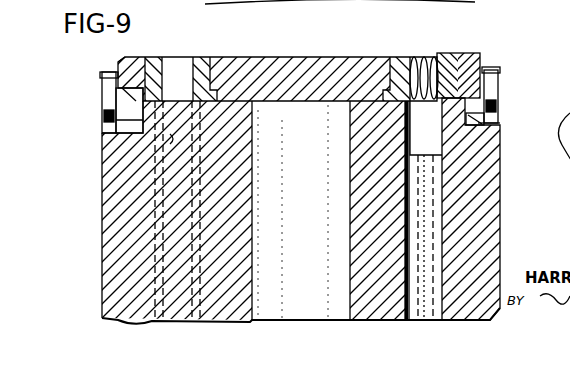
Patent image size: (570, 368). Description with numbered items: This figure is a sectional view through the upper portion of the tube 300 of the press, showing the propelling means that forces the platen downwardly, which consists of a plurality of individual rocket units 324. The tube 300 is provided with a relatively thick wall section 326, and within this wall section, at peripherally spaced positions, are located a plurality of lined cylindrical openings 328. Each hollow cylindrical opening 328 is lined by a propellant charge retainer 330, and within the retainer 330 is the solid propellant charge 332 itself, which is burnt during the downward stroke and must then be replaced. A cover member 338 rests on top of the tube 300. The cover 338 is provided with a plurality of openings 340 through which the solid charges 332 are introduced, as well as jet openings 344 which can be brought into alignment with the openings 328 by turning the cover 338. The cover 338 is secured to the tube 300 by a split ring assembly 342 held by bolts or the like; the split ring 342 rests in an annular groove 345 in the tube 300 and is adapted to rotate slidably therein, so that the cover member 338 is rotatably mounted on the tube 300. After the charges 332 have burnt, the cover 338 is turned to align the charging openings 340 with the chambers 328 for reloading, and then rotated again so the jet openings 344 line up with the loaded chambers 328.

The tube 300 is at (110, 274).
The rocket units 324 is at (397, 58).
The thick wall section 326 is at (487, 180).
The lined cylindrical openings 328 is at (200, 197).
The propellant charge retainer 330 is at (200, 160).
The solid propellant charge 332 is at (168, 240).
The cover member 338 is at (302, 59).
The openings 340 is at (183, 66).
The split ring assembly 342 is at (103, 110).
The jet openings 344 is at (441, 58).
The annular groove 345 is at (146, 100).